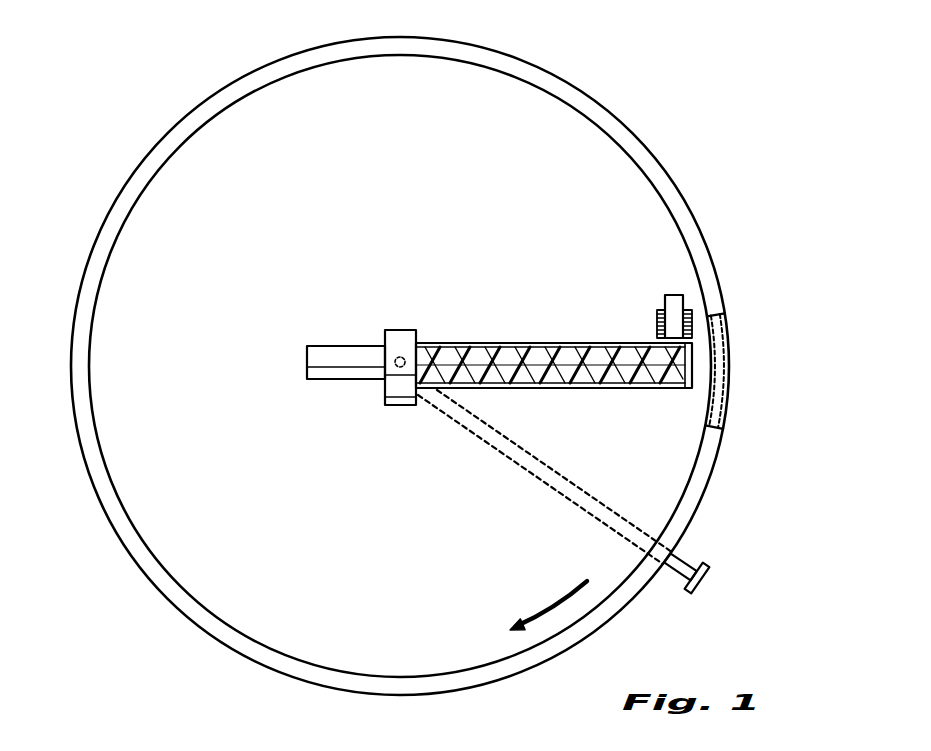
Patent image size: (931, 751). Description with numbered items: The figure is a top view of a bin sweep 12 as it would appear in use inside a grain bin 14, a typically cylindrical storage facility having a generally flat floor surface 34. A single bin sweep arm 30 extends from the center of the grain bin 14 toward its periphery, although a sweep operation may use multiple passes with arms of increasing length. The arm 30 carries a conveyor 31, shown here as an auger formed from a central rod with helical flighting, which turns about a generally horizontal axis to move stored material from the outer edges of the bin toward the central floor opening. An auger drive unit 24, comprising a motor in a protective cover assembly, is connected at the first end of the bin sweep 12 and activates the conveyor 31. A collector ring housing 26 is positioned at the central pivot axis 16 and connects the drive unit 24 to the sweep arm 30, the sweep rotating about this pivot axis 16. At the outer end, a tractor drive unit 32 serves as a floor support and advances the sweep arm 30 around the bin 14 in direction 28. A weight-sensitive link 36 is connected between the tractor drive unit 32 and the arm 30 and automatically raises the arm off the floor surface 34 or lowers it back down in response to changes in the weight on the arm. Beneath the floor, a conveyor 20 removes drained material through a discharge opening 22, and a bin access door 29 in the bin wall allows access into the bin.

The grain bin 14 is at (652, 170).
The bin sweep 12 is at (521, 338).
The auger drive unit 24 is at (337, 352).
The collector ring housing 26 is at (405, 338).
The pivot axis 16 is at (394, 364).
The bin sweep arm 30 is at (588, 342).
The conveyor 31 is at (643, 373).
The tractor drive unit 32 is at (673, 303).
The weight-sensitive link 36 is at (675, 328).
The bin access door 29 is at (722, 371).
The conveyor 20 is at (608, 507).
The discharge opening 22 is at (698, 588).
The direction 28 is at (557, 603).
The floor surface 34 is at (297, 497).